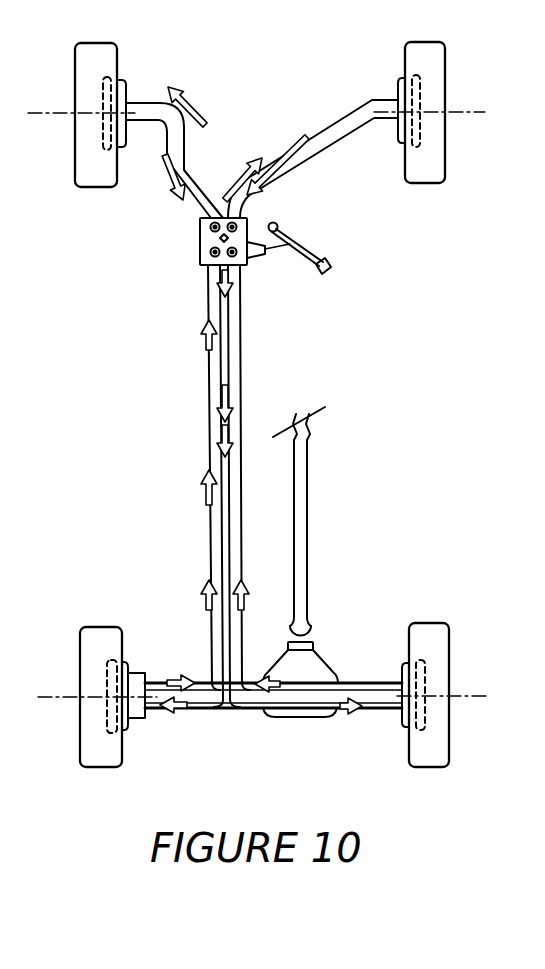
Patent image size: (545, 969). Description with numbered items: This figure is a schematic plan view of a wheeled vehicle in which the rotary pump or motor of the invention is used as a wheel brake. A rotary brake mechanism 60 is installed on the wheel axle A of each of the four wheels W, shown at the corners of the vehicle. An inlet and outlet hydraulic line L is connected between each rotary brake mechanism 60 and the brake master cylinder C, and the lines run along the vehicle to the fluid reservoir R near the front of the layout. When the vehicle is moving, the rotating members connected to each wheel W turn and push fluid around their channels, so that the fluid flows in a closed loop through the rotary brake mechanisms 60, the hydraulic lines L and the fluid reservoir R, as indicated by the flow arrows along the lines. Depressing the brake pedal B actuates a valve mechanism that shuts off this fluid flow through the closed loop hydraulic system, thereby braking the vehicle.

The rotary brake mechanism 60 is at (104, 92).
The wheel axle A is at (117, 107).
The wheel W is at (93, 174).
The hydraulic line L is at (173, 137).
The fluid reservoir R is at (200, 250).
The brake pedal B is at (330, 266).
The brake master cylinder C is at (248, 263).